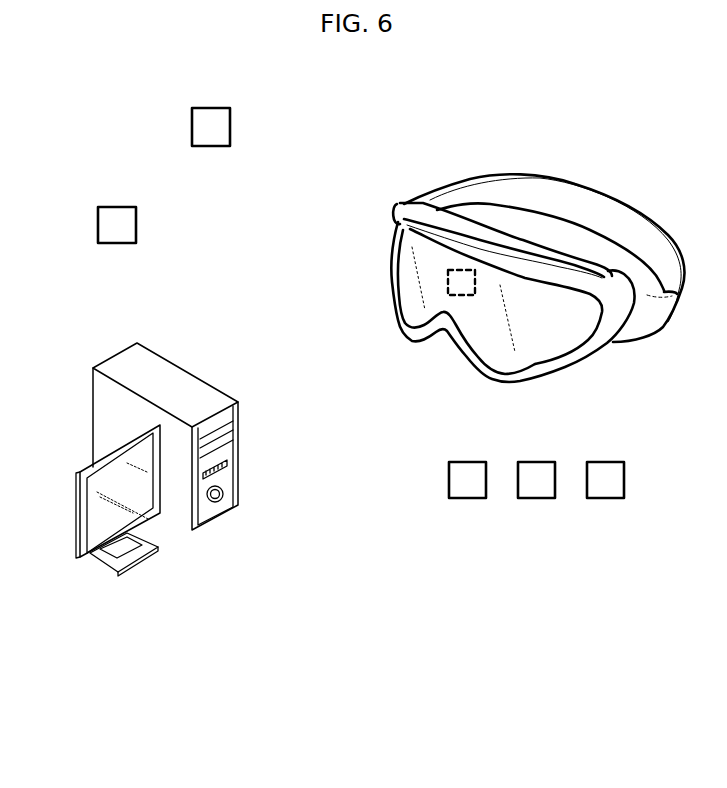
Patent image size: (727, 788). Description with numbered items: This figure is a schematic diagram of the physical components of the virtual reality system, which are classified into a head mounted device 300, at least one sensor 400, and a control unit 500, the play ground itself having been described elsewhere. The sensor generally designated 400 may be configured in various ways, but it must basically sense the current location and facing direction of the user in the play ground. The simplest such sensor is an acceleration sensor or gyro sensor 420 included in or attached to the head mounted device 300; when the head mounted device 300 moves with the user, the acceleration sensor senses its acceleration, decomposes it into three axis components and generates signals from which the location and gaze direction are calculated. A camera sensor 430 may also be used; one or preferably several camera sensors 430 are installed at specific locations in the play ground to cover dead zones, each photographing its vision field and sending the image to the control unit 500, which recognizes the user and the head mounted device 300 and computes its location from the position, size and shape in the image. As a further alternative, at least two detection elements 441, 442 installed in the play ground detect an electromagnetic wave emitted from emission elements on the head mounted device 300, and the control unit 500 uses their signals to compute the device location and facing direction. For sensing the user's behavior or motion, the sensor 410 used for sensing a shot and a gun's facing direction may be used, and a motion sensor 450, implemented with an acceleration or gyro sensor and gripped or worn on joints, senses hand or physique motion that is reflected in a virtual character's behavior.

The head mounted device 300 is at (418, 212).
The sensor 400 is at (434, 577).
The sensor 410 is at (416, 592).
The acceleration sensor or gyro sensor 420 is at (448, 280).
The camera sensor 430 is at (219, 108).
The detection element 441 is at (416, 662).
The detection element 442 is at (416, 686).
The motion sensor 450 is at (607, 490).
The control unit 500 is at (103, 418).